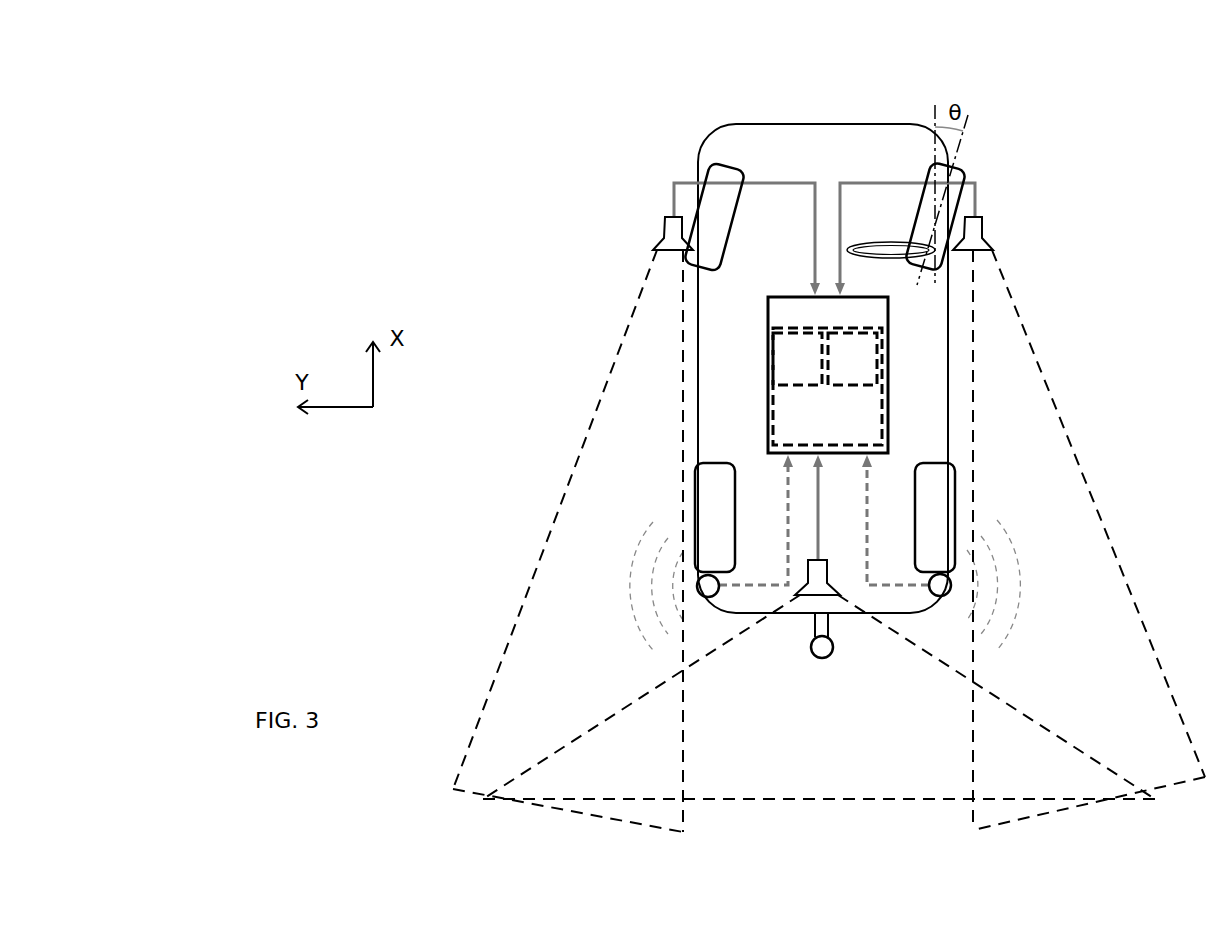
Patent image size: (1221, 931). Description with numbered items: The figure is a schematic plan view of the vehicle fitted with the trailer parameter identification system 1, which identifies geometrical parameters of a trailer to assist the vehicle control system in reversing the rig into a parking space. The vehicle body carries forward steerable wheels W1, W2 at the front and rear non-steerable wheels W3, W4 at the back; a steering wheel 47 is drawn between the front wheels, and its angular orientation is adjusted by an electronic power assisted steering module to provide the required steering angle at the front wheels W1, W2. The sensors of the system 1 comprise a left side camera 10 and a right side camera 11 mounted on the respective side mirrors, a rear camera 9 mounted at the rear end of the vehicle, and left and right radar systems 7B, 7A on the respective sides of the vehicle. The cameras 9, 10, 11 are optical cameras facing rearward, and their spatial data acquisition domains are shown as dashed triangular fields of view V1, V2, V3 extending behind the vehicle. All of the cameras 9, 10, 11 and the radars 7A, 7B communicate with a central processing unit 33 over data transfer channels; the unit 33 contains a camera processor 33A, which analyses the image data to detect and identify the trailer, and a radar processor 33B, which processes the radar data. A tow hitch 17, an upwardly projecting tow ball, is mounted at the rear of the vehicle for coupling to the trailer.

The trailer parameter identification system 1 is at (1036, 314).
The right radar system 7A is at (950, 580).
The left radar system 7B is at (697, 583).
The rear camera 9 is at (835, 593).
The left side camera 10 is at (673, 228).
The right side camera 11 is at (980, 235).
The tow hitch 17 is at (830, 654).
The central processing unit 33 is at (933, 375).
The camera processor 33A is at (782, 373).
The radar processor 33B is at (837, 373).
The steering wheel 47 is at (892, 240).
The forward steerable wheel W1 is at (718, 172).
The forward steerable wheel W2 is at (955, 177).
The rear non-steerable wheel W3 is at (723, 527).
The rear non-steerable wheel W4 is at (945, 520).
The field of view V1 is at (819, 697).
The field of view V2 is at (568, 541).
The field of view V3 is at (1089, 540).